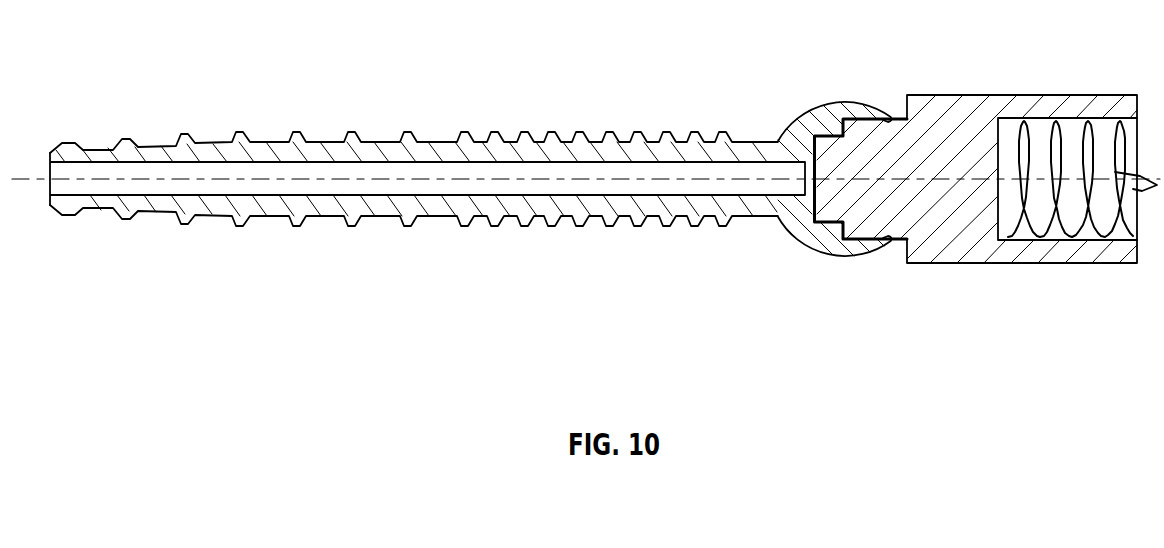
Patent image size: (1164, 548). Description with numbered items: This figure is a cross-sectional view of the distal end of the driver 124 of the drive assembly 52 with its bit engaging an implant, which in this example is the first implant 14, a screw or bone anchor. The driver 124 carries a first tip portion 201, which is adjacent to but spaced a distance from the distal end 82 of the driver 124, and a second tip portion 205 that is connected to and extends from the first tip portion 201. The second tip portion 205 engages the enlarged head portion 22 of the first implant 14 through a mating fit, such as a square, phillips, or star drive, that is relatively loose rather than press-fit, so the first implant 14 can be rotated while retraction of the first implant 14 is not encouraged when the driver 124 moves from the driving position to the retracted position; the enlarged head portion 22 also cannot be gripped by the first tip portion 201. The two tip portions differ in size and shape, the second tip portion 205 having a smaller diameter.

The first implant 14 is at (353, 131).
The enlarged head portion 22 is at (834, 105).
The distal end 82 is at (828, 231).
The first tip portion 201 is at (890, 244).
The second tip portion 205 is at (832, 132).
The drive assembly 52 is at (1000, 264).
The driver 124 is at (1028, 94).